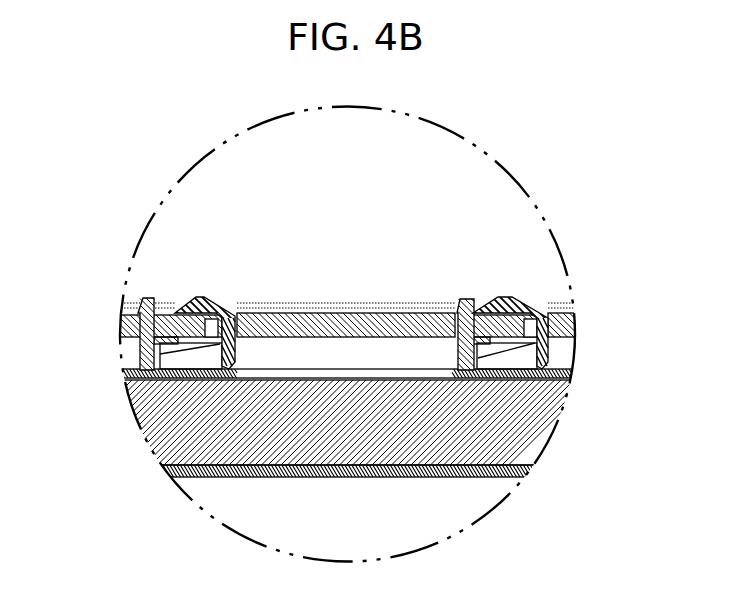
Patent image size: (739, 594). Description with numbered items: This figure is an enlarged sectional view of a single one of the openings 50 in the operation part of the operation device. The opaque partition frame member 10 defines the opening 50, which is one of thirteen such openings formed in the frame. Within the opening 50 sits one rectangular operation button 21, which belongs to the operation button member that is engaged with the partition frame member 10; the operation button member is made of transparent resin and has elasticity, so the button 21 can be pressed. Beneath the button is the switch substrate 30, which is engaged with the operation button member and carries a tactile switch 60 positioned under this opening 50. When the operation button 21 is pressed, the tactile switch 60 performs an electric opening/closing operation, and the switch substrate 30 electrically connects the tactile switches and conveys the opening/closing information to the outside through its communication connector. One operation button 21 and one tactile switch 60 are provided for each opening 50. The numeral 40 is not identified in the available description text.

The partition frame member 10 is at (510, 297).
The operation button 21 is at (193, 297).
The switch substrate 30 is at (548, 367).
The substrate 40 is at (563, 430).
The opening 50 is at (343, 295).
The tactile switch 60 is at (573, 313).